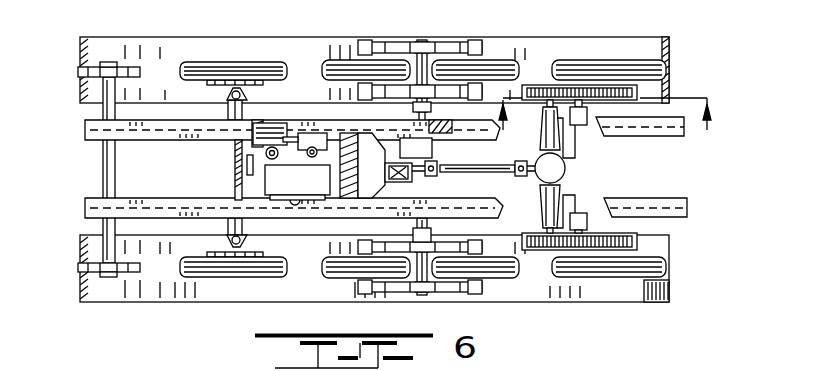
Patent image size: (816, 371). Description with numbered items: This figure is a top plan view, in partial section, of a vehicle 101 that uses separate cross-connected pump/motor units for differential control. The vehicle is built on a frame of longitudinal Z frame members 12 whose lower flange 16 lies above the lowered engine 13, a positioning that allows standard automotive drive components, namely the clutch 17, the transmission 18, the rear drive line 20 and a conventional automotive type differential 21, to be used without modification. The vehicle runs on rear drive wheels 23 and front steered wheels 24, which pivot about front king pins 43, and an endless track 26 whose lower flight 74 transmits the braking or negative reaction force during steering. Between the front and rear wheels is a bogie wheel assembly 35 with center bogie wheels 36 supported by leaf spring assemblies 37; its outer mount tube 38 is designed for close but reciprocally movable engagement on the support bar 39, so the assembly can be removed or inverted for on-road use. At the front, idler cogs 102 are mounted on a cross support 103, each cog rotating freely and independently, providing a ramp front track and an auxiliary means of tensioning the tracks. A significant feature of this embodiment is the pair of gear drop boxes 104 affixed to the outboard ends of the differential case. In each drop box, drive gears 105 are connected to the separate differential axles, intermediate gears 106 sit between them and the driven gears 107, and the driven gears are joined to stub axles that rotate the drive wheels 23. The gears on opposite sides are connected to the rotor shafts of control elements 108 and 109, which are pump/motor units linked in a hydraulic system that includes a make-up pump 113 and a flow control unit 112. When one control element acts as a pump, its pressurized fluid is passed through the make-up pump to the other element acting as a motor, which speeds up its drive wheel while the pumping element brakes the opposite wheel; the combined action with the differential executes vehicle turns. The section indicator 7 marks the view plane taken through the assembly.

The track 26 is at (146, 37).
The front conventionally steered wheels 24 is at (210, 62).
The lower flight 74 is at (263, 80).
The center bogie wheels 36 is at (337, 58).
The bogie wheel assembly 35 is at (414, 40).
The outer mount tube 38 is at (417, 41).
The leaf spring assemblies 37 is at (449, 45).
The gear drop boxes 104 is at (530, 85).
The intermediate gears 106 is at (576, 100).
The rear drive wheels 23 is at (662, 56).
The vehicle 101 is at (600, 32).
The front idler cogs 102 is at (78, 72).
The front king pins 43 is at (222, 95).
The lower flange 16 is at (200, 135).
The cross support 103 is at (103, 172).
The engine 13 is at (301, 192).
The make-up pump 113 is at (405, 147).
The support bar 39 is at (415, 110).
The flow control unit 112 is at (440, 133).
The section line 7- 7 is at (605, 103).
The drive gears 105 is at (543, 112).
The clutch 17 is at (375, 181).
The transmission 18 is at (391, 180).
The rear drive line 20 is at (473, 172).
The rear differential 21 is at (559, 177).
The control element 108 is at (582, 126).
The driven gears 107 is at (621, 103).
The longitudinal Z frame members 12 is at (684, 134).
The control element 109 is at (583, 213).